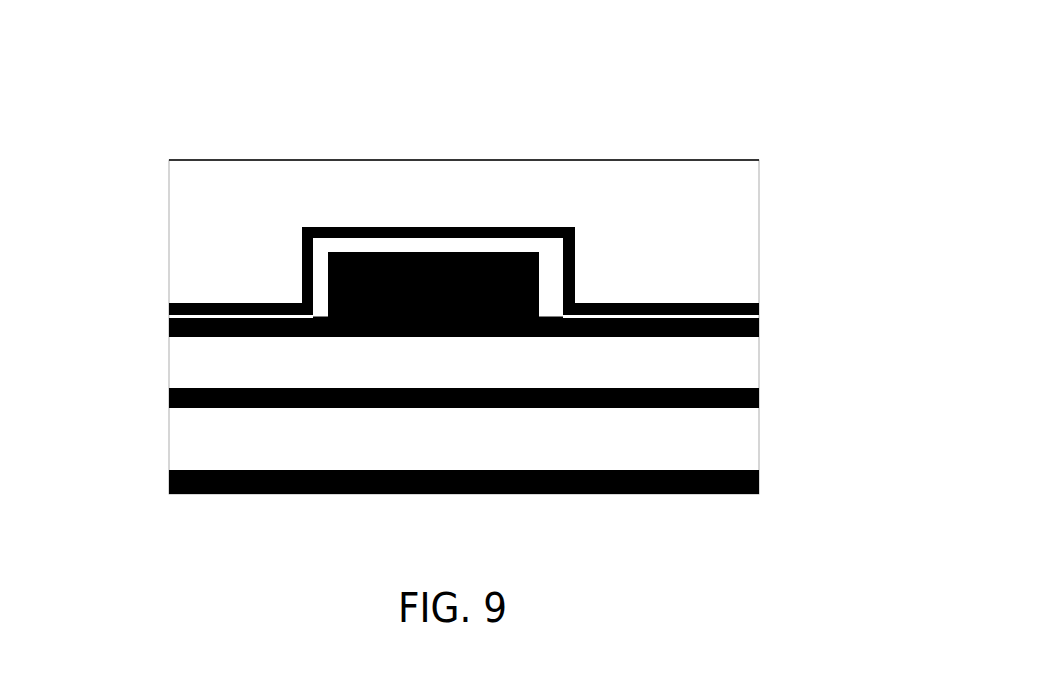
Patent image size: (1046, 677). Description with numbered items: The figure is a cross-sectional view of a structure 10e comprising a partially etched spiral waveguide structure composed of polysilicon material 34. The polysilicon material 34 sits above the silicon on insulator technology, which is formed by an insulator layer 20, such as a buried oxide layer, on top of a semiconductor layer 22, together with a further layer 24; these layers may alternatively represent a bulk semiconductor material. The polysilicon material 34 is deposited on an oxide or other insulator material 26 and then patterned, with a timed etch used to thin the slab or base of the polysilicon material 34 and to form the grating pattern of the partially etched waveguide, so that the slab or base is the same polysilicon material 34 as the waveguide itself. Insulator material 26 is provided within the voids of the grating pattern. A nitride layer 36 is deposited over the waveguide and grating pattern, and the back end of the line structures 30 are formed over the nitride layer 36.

The structure 10e is at (192, 116).
The back end of the line structures 30 is at (680, 284).
The nitride layer 36 is at (180, 303).
The polysilicon material 34 is at (317, 318).
The insulator material 26 is at (556, 278).
The layer 24 is at (168, 390).
The insulator layer 20 is at (700, 453).
The semiconductor layer 22 is at (735, 494).